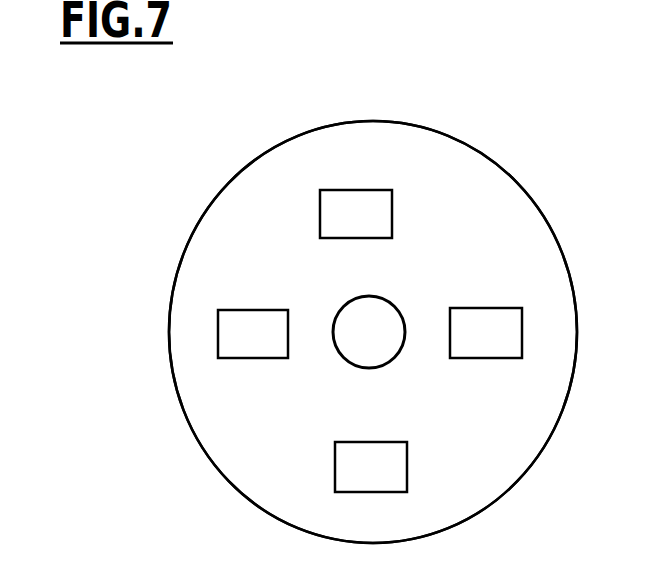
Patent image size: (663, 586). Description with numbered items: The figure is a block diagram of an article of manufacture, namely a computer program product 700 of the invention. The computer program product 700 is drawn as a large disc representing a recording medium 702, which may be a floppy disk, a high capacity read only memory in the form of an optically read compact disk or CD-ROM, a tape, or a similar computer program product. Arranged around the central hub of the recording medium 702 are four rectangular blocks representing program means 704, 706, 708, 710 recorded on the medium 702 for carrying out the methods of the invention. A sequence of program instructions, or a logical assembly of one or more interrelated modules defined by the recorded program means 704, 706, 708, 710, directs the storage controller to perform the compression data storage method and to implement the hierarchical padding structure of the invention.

The computer program product 700 is at (366, 93).
The recording medium 702 is at (535, 257).
The program means 704 is at (486, 333).
The program means 706 is at (253, 334).
The program means 708 is at (371, 467).
The program means 710 is at (356, 214).